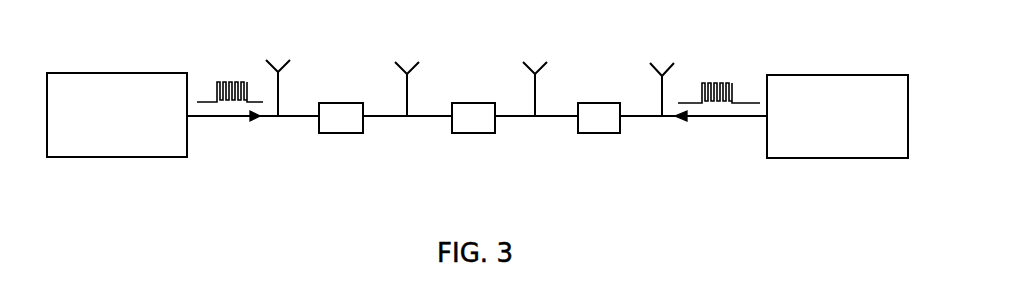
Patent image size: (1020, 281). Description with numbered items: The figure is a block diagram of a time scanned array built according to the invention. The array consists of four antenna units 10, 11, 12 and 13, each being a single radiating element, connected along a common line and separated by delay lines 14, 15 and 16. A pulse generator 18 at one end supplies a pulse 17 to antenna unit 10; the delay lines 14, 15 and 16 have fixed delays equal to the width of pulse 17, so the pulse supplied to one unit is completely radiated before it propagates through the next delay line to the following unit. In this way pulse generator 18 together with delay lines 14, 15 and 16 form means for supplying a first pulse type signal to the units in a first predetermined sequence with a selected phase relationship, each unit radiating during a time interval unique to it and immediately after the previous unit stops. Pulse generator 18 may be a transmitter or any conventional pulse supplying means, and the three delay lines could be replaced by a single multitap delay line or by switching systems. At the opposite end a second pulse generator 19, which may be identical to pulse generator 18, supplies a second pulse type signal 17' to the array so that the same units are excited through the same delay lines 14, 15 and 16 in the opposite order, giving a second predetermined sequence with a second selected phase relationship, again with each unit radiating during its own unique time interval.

The antenna unit 10 is at (282, 62).
The antenna unit 11 is at (411, 63).
The antenna unit 12 is at (539, 63).
The antenna unit 13 is at (667, 63).
The delay line 14 is at (340, 133).
The delay line 15 is at (473, 133).
The delay line 16 is at (603, 133).
The pulse 17 is at (230, 63).
The second pulse type signal 17' is at (719, 64).
The pulse generator 18 is at (120, 73).
The pulse generator 19 is at (840, 75).